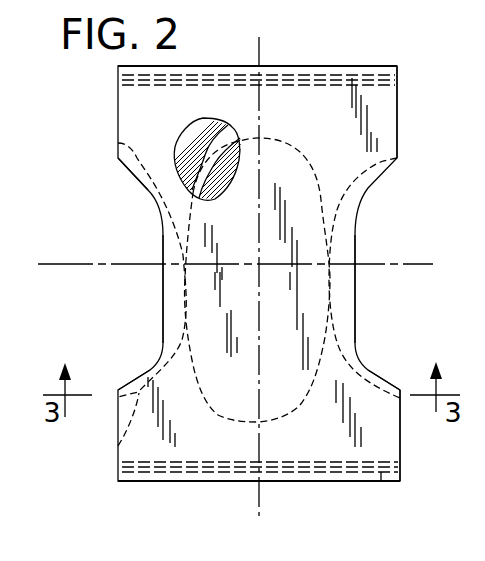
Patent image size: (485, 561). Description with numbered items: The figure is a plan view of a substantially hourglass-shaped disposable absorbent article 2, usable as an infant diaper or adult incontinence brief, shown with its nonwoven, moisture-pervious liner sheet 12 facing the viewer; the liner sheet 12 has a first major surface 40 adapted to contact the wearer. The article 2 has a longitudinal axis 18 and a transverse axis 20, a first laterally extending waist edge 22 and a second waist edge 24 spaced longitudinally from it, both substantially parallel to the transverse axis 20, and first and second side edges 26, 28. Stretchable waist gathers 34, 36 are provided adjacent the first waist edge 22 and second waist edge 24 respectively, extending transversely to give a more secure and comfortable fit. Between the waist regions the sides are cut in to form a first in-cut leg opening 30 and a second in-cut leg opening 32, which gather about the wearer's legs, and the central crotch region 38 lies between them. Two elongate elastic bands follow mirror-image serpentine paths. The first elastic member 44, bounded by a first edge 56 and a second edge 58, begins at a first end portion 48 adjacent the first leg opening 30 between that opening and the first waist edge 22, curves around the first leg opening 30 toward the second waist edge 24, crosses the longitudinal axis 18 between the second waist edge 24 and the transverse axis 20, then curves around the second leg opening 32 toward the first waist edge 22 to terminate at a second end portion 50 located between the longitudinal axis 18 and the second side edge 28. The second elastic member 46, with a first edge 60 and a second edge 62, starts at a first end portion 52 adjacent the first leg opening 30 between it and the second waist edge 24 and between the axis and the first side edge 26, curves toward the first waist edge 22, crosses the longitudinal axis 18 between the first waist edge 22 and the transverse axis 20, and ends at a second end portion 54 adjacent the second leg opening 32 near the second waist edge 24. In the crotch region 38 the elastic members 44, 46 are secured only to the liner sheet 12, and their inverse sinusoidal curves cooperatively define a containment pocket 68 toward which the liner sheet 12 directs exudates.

The absorbent article 2 is at (88, 137).
The liner sheet 12 is at (195, 448).
The longitudinal axis 18 is at (257, 53).
The transverse axis 20 is at (121, 265).
The first waist edge 22 is at (362, 65).
The second waist edge 24 is at (321, 483).
The first side edge 26 is at (118, 108).
The second side edge 28 is at (397, 127).
The first in-cut leg opening 30 is at (153, 358).
The second in-cut leg opening 32 is at (356, 245).
The waist gather 34 is at (286, 86).
The waist gather 36 is at (384, 486).
The crotch region 38 is at (255, 367).
The first major surface 40 is at (386, 443).
The first elastic member 44 is at (118, 143).
The second elastic member 46 is at (118, 446).
The first end portion 48 is at (118, 160).
The second end portion 50 is at (397, 160).
The first end portion 52 is at (118, 392).
The second end portion 54 is at (403, 402).
The first edge 56 is at (140, 172).
The second edge 58 is at (143, 190).
The first edge 60 is at (284, 139).
The second edge 62 is at (238, 180).
The containment pocket 68 is at (280, 389).